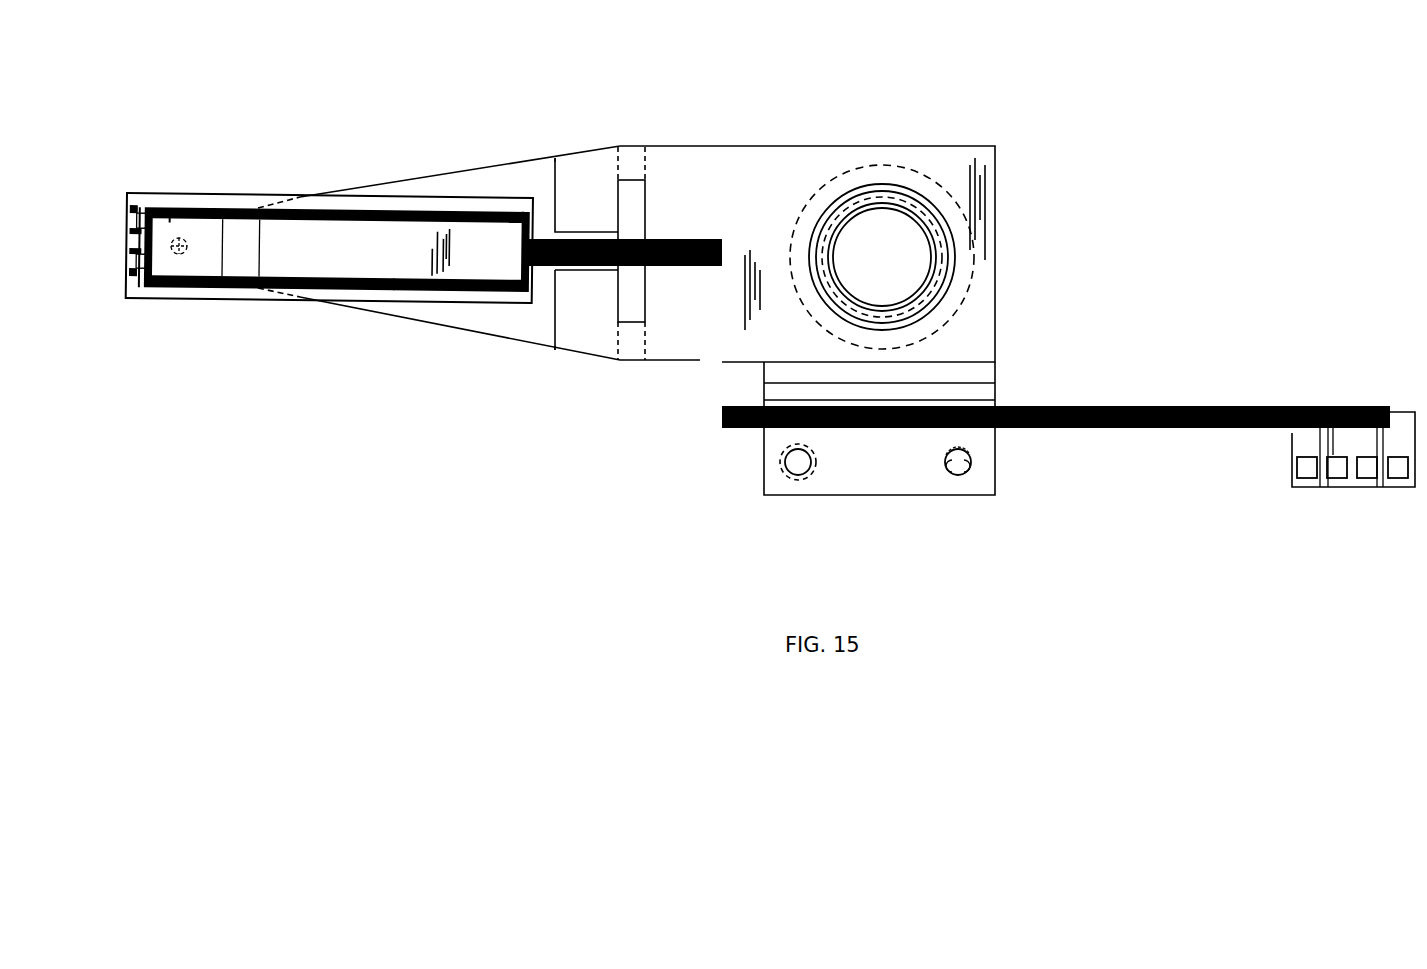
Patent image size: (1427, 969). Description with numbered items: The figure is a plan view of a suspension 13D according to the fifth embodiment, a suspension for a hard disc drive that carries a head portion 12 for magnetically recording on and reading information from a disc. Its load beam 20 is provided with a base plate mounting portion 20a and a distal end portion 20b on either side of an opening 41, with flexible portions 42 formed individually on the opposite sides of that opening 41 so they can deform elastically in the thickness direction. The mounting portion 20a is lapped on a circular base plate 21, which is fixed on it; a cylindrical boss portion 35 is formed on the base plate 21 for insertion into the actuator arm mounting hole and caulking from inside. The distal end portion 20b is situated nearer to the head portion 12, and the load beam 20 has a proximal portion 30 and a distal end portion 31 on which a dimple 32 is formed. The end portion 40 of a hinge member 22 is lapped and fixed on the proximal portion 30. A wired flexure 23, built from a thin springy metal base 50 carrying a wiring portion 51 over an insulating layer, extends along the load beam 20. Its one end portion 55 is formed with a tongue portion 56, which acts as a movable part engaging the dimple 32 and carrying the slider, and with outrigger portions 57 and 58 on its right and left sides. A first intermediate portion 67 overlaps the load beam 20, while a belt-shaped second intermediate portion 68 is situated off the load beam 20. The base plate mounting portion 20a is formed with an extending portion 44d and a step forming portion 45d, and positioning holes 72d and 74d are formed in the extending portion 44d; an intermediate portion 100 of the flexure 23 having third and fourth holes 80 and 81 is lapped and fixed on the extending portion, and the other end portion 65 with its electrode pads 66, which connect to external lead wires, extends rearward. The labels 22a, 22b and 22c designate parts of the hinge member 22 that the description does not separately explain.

The head portion 12 is at (152, 315).
The suspension 13D is at (463, 113).
The load beam 20 is at (402, 176).
The base plate mounting portion 20a is at (755, 160).
The distal end portion 20b is at (440, 182).
The base plate 21 is at (868, 165).
The hinge member 22 is at (690, 144).
The housing inner wall 22a is at (590, 238).
The housing upper wall 22b is at (556, 168).
The housing lower wall 22c is at (556, 330).
The flexure 23 is at (508, 312).
The proximal portion 30 is at (583, 160).
The distal end portion 31 is at (168, 226).
The dimple 32 is at (180, 256).
The boss portion 35 is at (833, 256).
The end portion 40 is at (584, 350).
The opening 41 is at (648, 200).
The flexible portions 42 is at (637, 160).
The extending portion 44d is at (764, 468).
The step forming portion 45d is at (1005, 400).
The metal base 50 is at (440, 298).
The wiring portion 51 is at (345, 214).
The one end portion 55 is at (128, 238).
The tongue portion 56 is at (212, 272).
The outrigger portion 57 is at (213, 202).
The outrigger portion 58 is at (248, 302).
The other end portion 65 is at (1393, 489).
The electrode pads 66 is at (1360, 488).
The first intermediate portion 67 is at (395, 303).
The second intermediate portion 68 is at (700, 408).
The positioning hole 72d is at (964, 480).
The positioning hole 74d is at (812, 480).
The third hole 80 is at (950, 478).
The fourth hole 81 is at (800, 478).
The intermediate portion 100 is at (884, 497).